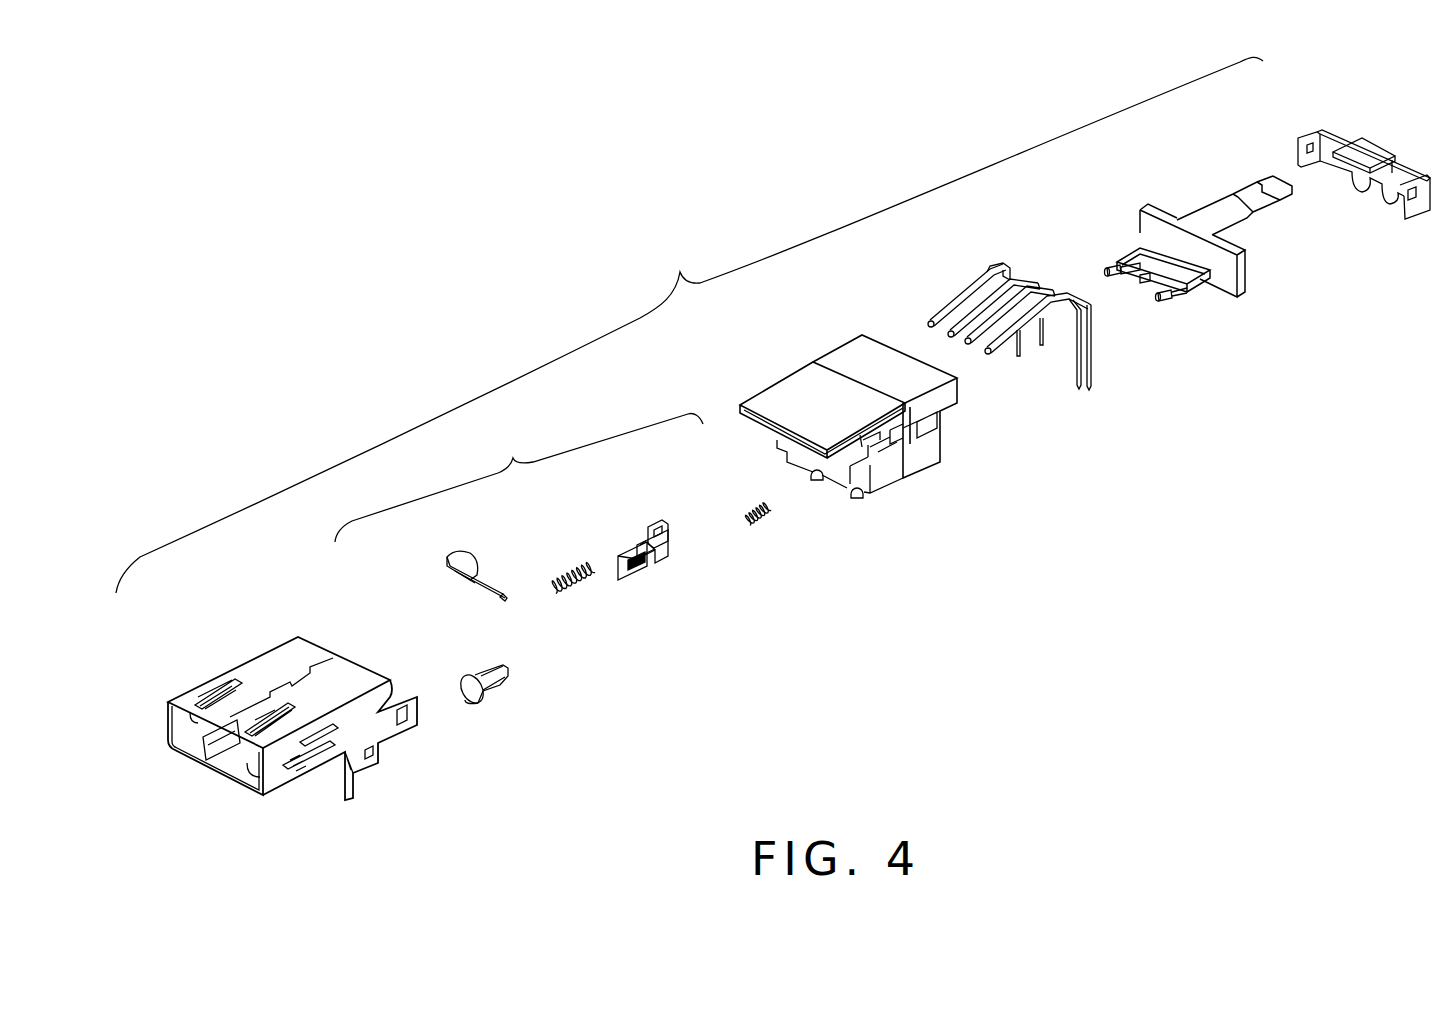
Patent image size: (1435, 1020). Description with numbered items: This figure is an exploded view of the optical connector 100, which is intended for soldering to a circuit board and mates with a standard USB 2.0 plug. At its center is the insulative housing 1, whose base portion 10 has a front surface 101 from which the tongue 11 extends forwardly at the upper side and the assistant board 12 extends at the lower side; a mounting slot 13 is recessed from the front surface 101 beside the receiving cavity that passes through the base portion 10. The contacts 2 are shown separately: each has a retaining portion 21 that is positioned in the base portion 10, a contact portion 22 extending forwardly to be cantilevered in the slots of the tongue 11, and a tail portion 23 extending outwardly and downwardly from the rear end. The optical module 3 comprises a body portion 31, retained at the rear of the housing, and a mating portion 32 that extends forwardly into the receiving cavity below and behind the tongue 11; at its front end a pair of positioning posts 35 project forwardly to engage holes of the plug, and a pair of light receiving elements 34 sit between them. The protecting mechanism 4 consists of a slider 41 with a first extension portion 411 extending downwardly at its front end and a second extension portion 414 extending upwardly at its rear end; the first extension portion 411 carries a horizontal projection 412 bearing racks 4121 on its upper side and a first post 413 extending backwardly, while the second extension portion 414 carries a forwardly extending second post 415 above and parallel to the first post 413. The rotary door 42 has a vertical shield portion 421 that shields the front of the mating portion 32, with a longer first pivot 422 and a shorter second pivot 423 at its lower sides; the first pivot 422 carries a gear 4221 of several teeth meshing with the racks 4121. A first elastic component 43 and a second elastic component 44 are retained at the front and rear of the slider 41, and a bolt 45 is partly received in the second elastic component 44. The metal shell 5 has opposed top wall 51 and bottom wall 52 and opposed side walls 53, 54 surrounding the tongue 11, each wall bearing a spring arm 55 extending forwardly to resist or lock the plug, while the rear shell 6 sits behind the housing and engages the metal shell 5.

The optical connector 100 is at (689, 325).
The insulative housing 1 is at (859, 437).
The base portion 10 is at (938, 433).
The front surface 101 is at (910, 445).
The tongue 11 is at (781, 397).
The assistant board 12 is at (885, 473).
The mounting slot 13 is at (847, 462).
The contacts 2 is at (1015, 335).
The retaining portion 21 is at (1053, 320).
The contact portion 22 is at (1008, 353).
The tail portion 23 is at (1093, 363).
The optical module 3 is at (1173, 253).
The body portion 31 is at (1230, 277).
The mating portion 32 is at (1197, 287).
The light receiving elements 34 is at (1153, 290).
The positioning posts 35 is at (1110, 272).
The protecting mechanism 4 is at (519, 477).
The slider 41 is at (653, 566).
The first extension portion 411 is at (658, 580).
The projection 412 is at (621, 603).
The racks 4121 is at (630, 567).
The first post 413 is at (668, 555).
The second extension portion 414 is at (658, 532).
The second post 415 is at (655, 533).
The rotary door 42 is at (435, 580).
The shield portion 421 is at (458, 577).
The first pivot 422 is at (483, 590).
The gear 4221 is at (502, 598).
The second pivot 423 is at (448, 565).
The first elastic component 43 is at (755, 497).
The second elastic component 44 is at (567, 570).
The bolt 45 is at (497, 680).
The metal shell 5 is at (271, 714).
The top wall 51 is at (282, 670).
The bottom wall 52 is at (237, 760).
The side wall 53 is at (340, 735).
The side wall 54 is at (180, 725).
The spring arm 55 is at (188, 757).
The rear shell 6 is at (1287, 122).